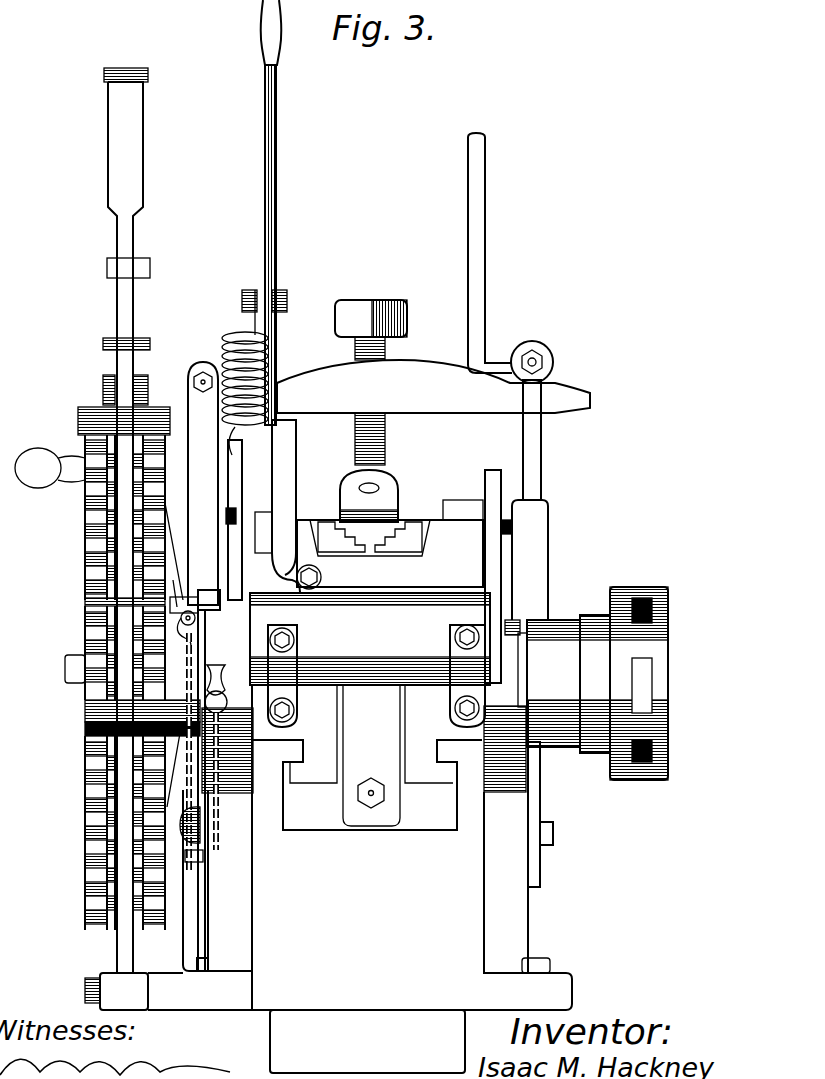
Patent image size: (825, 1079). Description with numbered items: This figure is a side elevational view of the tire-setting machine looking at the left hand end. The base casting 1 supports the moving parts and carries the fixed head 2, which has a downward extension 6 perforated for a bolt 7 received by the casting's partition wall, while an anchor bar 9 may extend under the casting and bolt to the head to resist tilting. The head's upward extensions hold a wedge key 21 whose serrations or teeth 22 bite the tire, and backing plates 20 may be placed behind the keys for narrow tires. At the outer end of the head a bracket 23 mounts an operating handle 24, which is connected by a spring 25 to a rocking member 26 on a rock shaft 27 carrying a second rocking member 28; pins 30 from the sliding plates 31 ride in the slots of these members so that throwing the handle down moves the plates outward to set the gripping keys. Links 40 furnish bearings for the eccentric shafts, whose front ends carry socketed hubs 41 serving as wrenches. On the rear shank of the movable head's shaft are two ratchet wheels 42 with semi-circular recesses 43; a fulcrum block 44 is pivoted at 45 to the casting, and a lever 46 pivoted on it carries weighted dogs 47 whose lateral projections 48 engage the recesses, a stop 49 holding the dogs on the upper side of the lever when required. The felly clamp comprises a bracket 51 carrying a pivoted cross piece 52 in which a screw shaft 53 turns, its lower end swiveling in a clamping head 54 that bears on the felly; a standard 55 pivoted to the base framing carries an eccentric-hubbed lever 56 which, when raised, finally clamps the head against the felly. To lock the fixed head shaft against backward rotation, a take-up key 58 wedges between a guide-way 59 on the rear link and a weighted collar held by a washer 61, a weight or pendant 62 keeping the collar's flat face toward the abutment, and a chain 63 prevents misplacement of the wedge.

The base casting 1 is at (332, 847).
The fixed head 2 is at (370, 660).
The downward extension 6 is at (371, 775).
The bolt 7 is at (375, 797).
The anchor bar 9 is at (367, 1041).
The backing plates 20 is at (318, 535).
The wedge key 21 is at (375, 540).
The serrations or teeth 22 is at (390, 551).
The bracket 23 is at (285, 465).
The operating handle 24 is at (277, 176).
The spring 25 is at (240, 340).
The rocking member 26 is at (243, 488).
The rock shaft 27 is at (362, 668).
The rocking member 28 is at (578, 553).
The pins 30 is at (590, 512).
The sliding plates 31 is at (466, 518).
The links 40 is at (556, 797).
The socketed hubs 41 is at (593, 683).
The ratchet wheels 42 is at (150, 572).
The semi-circular recesses 43 is at (150, 752).
The fulcrum block 44 is at (122, 678).
The pivot 45 is at (100, 976).
The lever 46 is at (125, 142).
The weighted dogs 47 is at (110, 382).
The lateral projections 48 is at (80, 416).
The stop 49 is at (108, 338).
The bracket 51 is at (216, 520).
The cross piece 52 is at (433, 358).
The screw shaft 53 is at (385, 440).
The clamping head 54 is at (345, 498).
The standard 55 is at (541, 472).
The lever 56 is at (480, 282).
The take-up key 58 is at (82, 601).
The guide-way 59 is at (205, 648).
The washer 61 is at (110, 708).
The weight or pendant 62 is at (184, 862).
The chain 63 is at (222, 835).